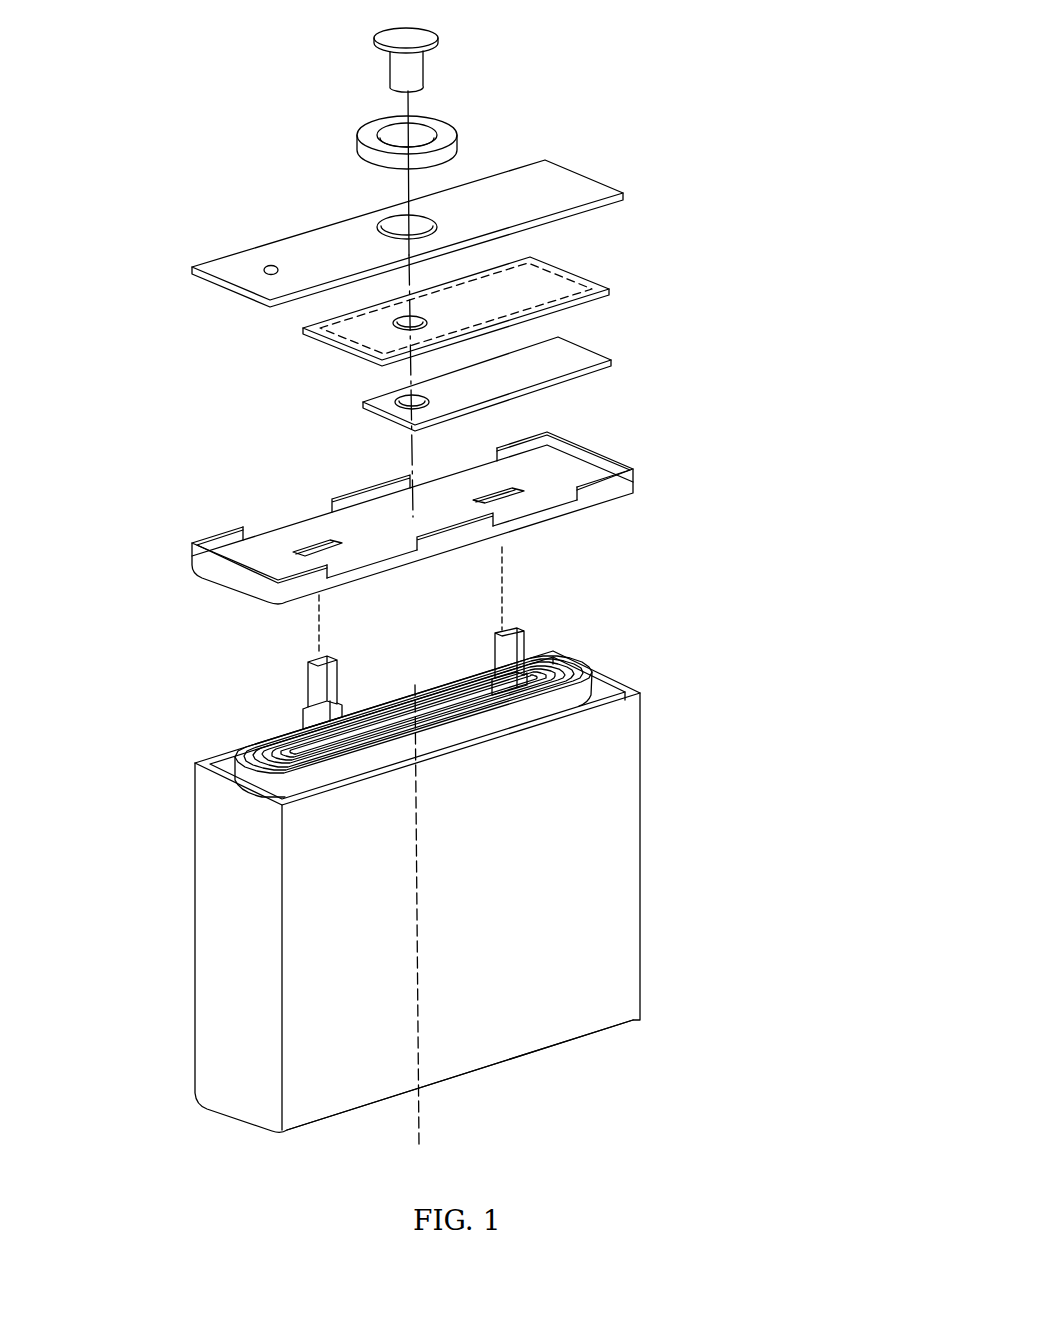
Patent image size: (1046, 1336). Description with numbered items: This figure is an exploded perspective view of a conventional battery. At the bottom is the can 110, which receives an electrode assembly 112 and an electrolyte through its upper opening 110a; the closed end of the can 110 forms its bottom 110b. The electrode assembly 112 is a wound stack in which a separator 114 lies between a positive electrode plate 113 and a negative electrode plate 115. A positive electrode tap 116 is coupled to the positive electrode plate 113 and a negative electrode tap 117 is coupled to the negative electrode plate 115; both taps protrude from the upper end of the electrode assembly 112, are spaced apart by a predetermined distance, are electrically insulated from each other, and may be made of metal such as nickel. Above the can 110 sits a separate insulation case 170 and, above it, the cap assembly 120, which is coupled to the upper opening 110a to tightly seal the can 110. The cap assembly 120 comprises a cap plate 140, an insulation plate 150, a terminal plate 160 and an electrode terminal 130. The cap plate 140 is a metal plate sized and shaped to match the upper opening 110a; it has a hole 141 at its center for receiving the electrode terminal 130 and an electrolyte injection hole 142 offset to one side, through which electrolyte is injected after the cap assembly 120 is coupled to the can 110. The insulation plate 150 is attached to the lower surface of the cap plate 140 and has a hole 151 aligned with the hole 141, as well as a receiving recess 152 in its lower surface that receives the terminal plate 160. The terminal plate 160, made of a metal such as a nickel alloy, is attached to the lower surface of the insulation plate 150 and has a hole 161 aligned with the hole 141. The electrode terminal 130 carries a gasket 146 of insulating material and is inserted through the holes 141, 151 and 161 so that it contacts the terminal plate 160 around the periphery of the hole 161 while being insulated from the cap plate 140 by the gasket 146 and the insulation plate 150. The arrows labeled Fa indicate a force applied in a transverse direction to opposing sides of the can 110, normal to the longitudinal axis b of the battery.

The can 110 is at (613, 908).
The upper opening 110a is at (607, 687).
The bottom of case 110b is at (605, 1030).
The electrode assembly 112 is at (683, 608).
The positive electrode plate 113 is at (588, 674).
The separator 114 is at (565, 668).
The negative electrode plate 115 is at (558, 670).
The positive electrode tap 116 is at (324, 688).
The negative electrode tap 117 is at (508, 650).
The cap assembly 120 is at (717, 38).
The electrode terminal 130 is at (417, 38).
The cap plate 140 is at (562, 170).
The hole 141 is at (393, 221).
The electrolyte injection hole 142 is at (265, 271).
The gasket 146 is at (370, 132).
The insulation plate 150 is at (582, 275).
The hole 151 is at (397, 326).
The receiving recess 152 is at (308, 335).
The terminal plate 160 is at (578, 345).
The hole 161 is at (392, 412).
The insulation case 170 is at (207, 563).
The force Fa is at (668, 838).
The longitudinal axis b is at (438, 1134).